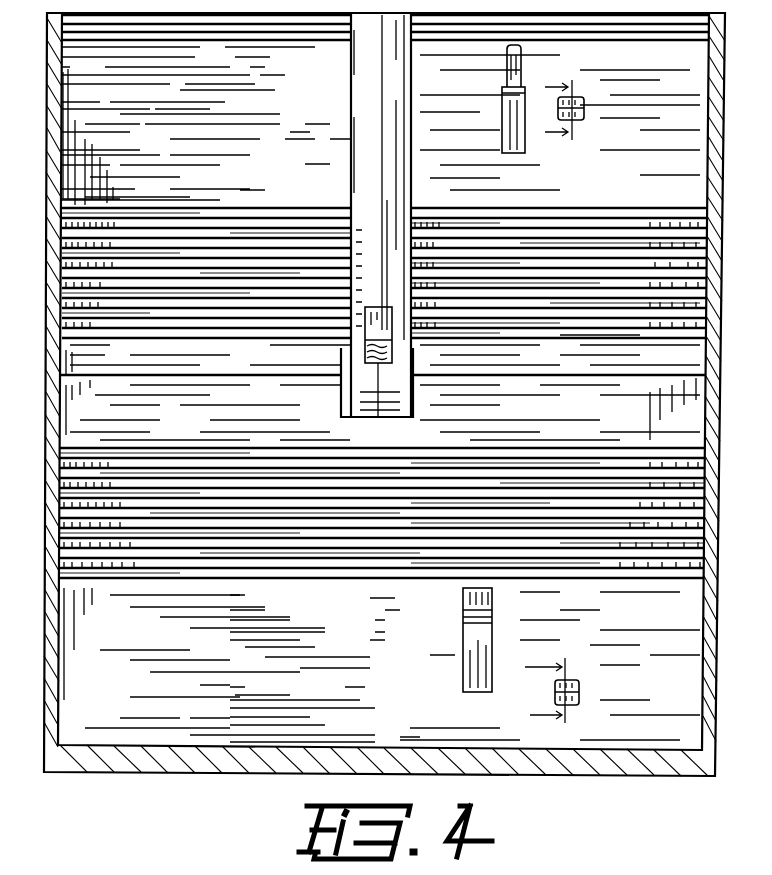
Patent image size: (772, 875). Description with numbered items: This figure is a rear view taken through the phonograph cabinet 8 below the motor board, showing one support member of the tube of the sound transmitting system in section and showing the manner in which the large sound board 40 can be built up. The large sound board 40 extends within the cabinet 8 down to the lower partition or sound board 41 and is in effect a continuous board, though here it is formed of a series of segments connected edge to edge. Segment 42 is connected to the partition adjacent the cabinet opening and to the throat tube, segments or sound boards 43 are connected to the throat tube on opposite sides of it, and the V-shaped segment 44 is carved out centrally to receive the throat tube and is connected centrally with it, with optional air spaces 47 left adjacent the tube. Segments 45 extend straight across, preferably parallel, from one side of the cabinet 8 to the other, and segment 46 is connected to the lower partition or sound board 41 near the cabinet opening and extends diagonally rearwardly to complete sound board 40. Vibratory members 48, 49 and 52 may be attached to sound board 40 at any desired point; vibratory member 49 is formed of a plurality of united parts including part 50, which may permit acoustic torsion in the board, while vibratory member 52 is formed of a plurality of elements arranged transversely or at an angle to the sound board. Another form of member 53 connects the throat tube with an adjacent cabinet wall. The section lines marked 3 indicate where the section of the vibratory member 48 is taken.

The section line 3- 3 is at (539, 401).
The cabinet 8 is at (75, 752).
The large sound board 40 is at (165, 275).
The lower partition or sound board 41 is at (633, 768).
The segment 42 is at (637, 185).
The segments or sound boards 43 is at (292, 326).
The V-shaped segment 44 is at (210, 355).
The segments 45 is at (297, 465).
The segment 46 is at (112, 613).
The air spaces 47 is at (342, 390).
The vibratory member 48 is at (577, 98).
The vibratory member 49 is at (512, 117).
The part of vibratory member 49 50 is at (518, 60).
The vibratory member 52 is at (472, 640).
The member 53 is at (378, 315).